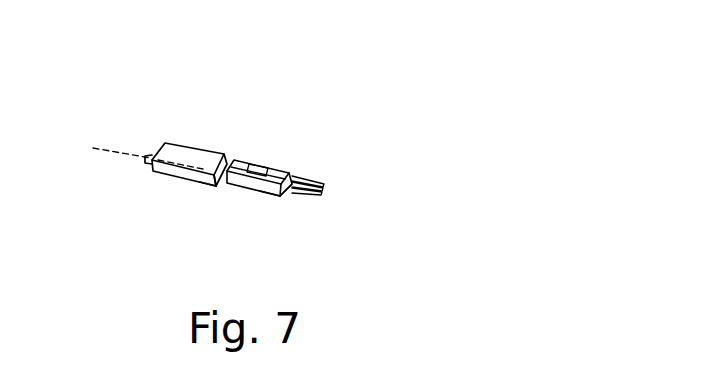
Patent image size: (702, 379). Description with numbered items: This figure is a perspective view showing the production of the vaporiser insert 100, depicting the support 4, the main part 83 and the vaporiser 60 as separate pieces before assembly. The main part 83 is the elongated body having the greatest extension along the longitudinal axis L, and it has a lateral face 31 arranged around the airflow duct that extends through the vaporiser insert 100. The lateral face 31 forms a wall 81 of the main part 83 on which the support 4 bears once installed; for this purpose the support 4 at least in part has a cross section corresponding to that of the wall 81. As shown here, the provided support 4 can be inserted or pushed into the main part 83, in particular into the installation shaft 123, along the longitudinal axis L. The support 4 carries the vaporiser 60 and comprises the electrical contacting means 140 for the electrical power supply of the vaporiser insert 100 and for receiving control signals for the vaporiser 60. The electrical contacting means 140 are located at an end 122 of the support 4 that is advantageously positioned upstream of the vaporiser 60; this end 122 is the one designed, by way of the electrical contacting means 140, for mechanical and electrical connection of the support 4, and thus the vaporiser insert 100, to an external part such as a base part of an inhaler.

The vaporiser insert 100 is at (275, 88).
The lateral face 31 is at (165, 142).
The wall 81 is at (224, 153).
The main part 83 is at (203, 168).
The installation shaft 123 is at (217, 188).
The support 4 is at (290, 154).
The vaporiser 60 is at (258, 167).
The end of the support 122 is at (293, 204).
The electrical contacting means 140 is at (338, 171).